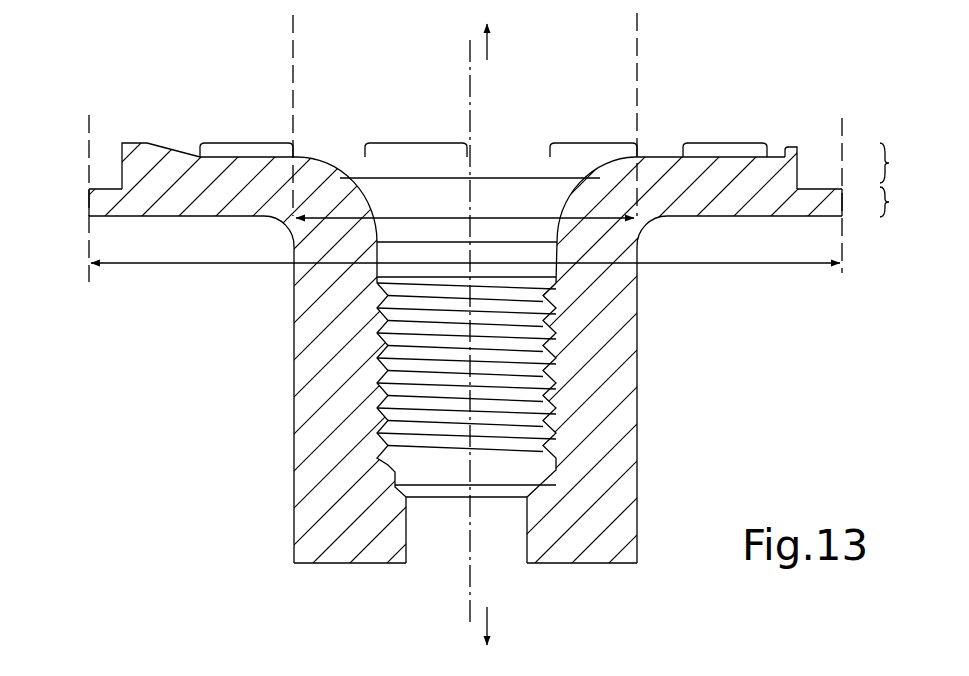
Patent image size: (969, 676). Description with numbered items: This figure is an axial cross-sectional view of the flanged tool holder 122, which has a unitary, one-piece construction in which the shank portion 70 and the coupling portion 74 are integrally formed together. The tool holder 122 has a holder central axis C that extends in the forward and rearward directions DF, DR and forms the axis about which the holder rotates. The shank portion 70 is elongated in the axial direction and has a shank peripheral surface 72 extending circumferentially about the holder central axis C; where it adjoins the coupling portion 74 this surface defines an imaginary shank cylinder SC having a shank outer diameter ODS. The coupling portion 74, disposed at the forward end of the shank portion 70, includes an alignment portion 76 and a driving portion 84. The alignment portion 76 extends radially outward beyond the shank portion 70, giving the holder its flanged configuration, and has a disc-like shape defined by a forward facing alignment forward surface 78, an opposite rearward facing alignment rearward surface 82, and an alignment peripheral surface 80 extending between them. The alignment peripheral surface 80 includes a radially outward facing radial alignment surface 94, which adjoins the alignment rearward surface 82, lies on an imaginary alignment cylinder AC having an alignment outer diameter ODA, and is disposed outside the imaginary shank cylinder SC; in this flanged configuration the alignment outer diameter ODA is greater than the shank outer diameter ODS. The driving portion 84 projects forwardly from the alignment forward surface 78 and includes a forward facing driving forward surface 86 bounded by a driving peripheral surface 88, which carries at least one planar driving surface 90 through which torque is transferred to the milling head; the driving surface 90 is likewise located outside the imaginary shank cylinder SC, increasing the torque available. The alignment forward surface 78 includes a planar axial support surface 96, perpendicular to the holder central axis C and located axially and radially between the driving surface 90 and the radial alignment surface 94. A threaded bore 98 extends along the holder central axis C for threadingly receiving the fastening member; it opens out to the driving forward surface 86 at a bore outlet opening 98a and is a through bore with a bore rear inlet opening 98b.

The tool holder 122 is at (106, 74).
The shank portion 70 is at (530, 323).
The shank peripheral surface 72 is at (637, 408).
The coupling portion 74 is at (466, 161).
The alignment portion 76 is at (903, 203).
The alignment forward surface 78 is at (809, 184).
The alignment peripheral surface 80 is at (86, 228).
The alignment rearward surface 82 is at (730, 215).
The driving portion 84 is at (903, 163).
The driving forward surface 86 is at (238, 158).
The driving peripheral surface 88 is at (797, 170).
The driving surface 90 is at (133, 150).
The radial alignment surface 94 is at (842, 202).
The axial support surface 96 is at (107, 186).
The threaded bore 98 is at (403, 156).
The bore outlet opening 98a is at (553, 193).
The bore rear inlet opening 98b is at (497, 570).
The imaginary alignment cylinder AC is at (88, 149).
The imaginary shank cylinder SC is at (637, 13).
The holder central axis C is at (471, 103).
The forward direction DF is at (507, 45).
The rearward direction DR is at (511, 634).
The alignment outer diameter ODA is at (727, 264).
The shank outer diameter ODS is at (593, 221).